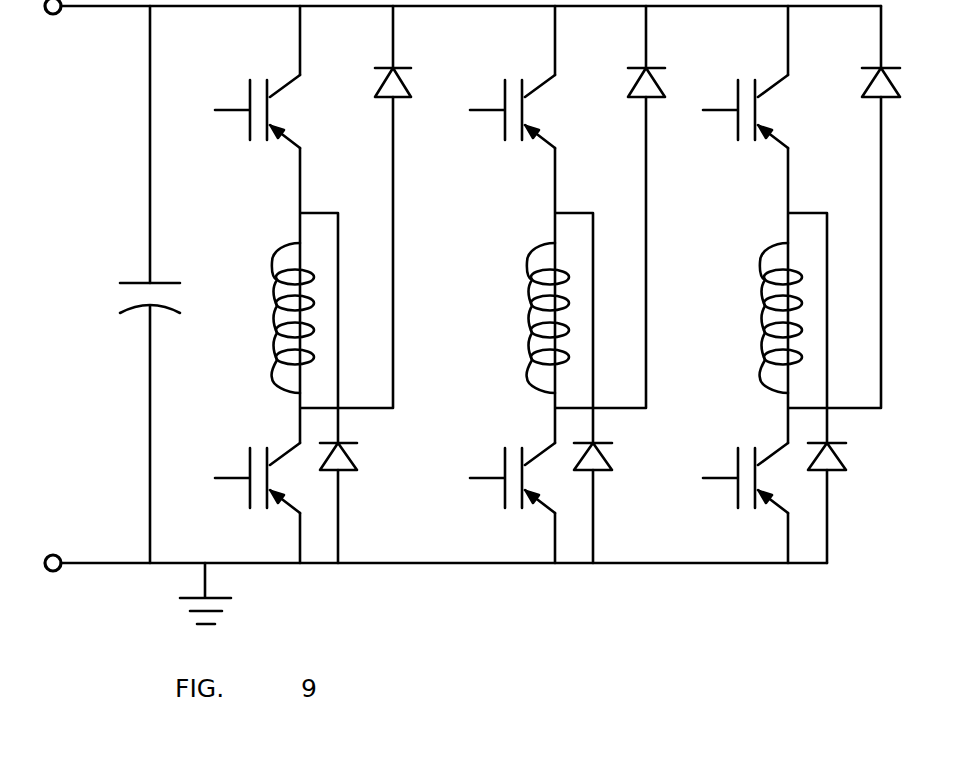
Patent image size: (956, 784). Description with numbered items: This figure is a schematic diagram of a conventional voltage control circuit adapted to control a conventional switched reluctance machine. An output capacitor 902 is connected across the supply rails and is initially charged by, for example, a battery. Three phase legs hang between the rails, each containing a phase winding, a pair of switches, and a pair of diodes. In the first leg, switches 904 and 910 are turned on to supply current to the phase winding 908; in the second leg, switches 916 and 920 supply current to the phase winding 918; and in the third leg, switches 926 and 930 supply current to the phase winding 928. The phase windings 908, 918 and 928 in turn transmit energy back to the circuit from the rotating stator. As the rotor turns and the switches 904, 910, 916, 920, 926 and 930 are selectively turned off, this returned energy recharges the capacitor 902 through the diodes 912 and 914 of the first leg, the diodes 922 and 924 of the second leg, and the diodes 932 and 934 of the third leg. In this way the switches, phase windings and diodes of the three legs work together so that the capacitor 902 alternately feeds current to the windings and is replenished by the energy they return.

The output capacitor 902 is at (132, 280).
The switch 904 is at (233, 108).
The phase winding 908 is at (277, 257).
The switch 910 is at (235, 476).
The diode 912 is at (356, 463).
The diode 914 is at (401, 67).
The switch 916 is at (488, 113).
The phase winding 918 is at (528, 284).
The switch 920 is at (490, 480).
The diode 922 is at (611, 463).
The diode 924 is at (639, 67).
The switch 926 is at (720, 114).
The phase winding 928 is at (761, 322).
The switch 930 is at (720, 480).
The diode 932 is at (834, 473).
The diode 934 is at (872, 66).